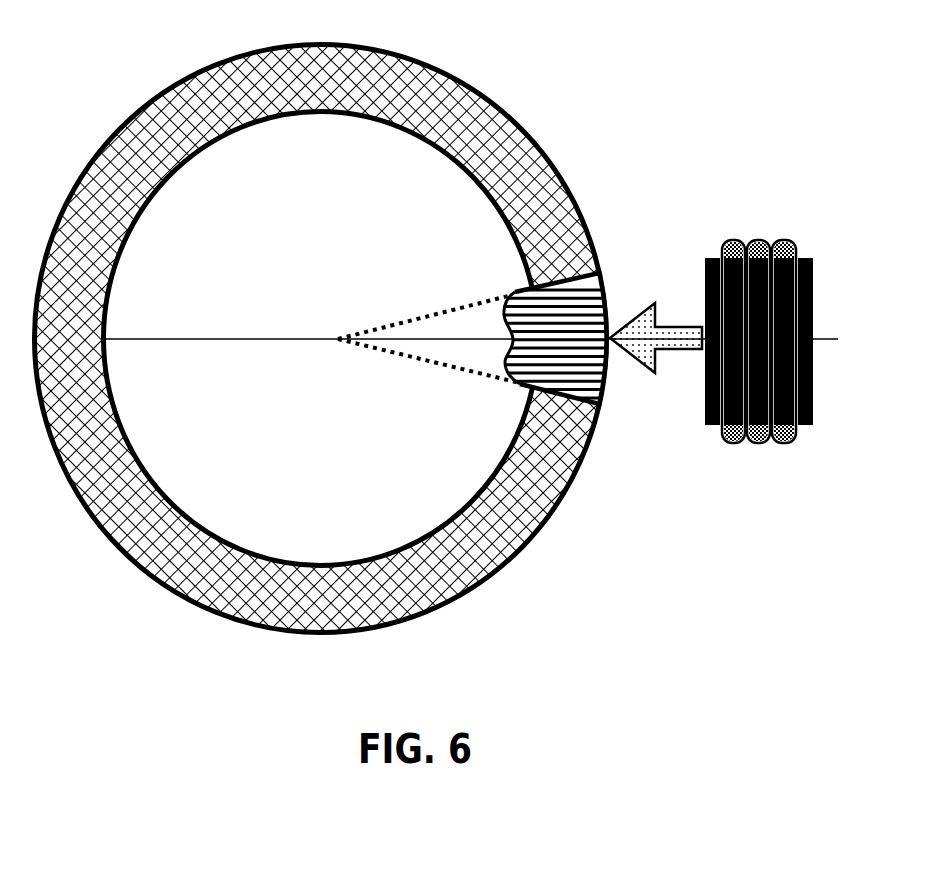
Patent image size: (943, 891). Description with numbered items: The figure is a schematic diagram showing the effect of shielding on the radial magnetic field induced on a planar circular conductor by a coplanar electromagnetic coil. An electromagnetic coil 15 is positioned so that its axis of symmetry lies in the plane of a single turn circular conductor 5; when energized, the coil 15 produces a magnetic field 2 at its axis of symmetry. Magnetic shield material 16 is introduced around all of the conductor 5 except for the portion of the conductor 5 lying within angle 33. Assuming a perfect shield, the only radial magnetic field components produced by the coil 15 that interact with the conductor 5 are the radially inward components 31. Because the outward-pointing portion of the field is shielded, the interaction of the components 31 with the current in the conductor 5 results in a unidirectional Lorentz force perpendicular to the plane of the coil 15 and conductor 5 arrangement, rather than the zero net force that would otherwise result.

The magnetic shield material 16 is at (483, 580).
The single turn circular conductor 5 is at (607, 277).
The angle 33 is at (448, 310).
The radially inward magnetic field distribution 31 is at (563, 362).
The magnetic field 2 is at (653, 367).
The electromagnetic coil 15 is at (760, 240).